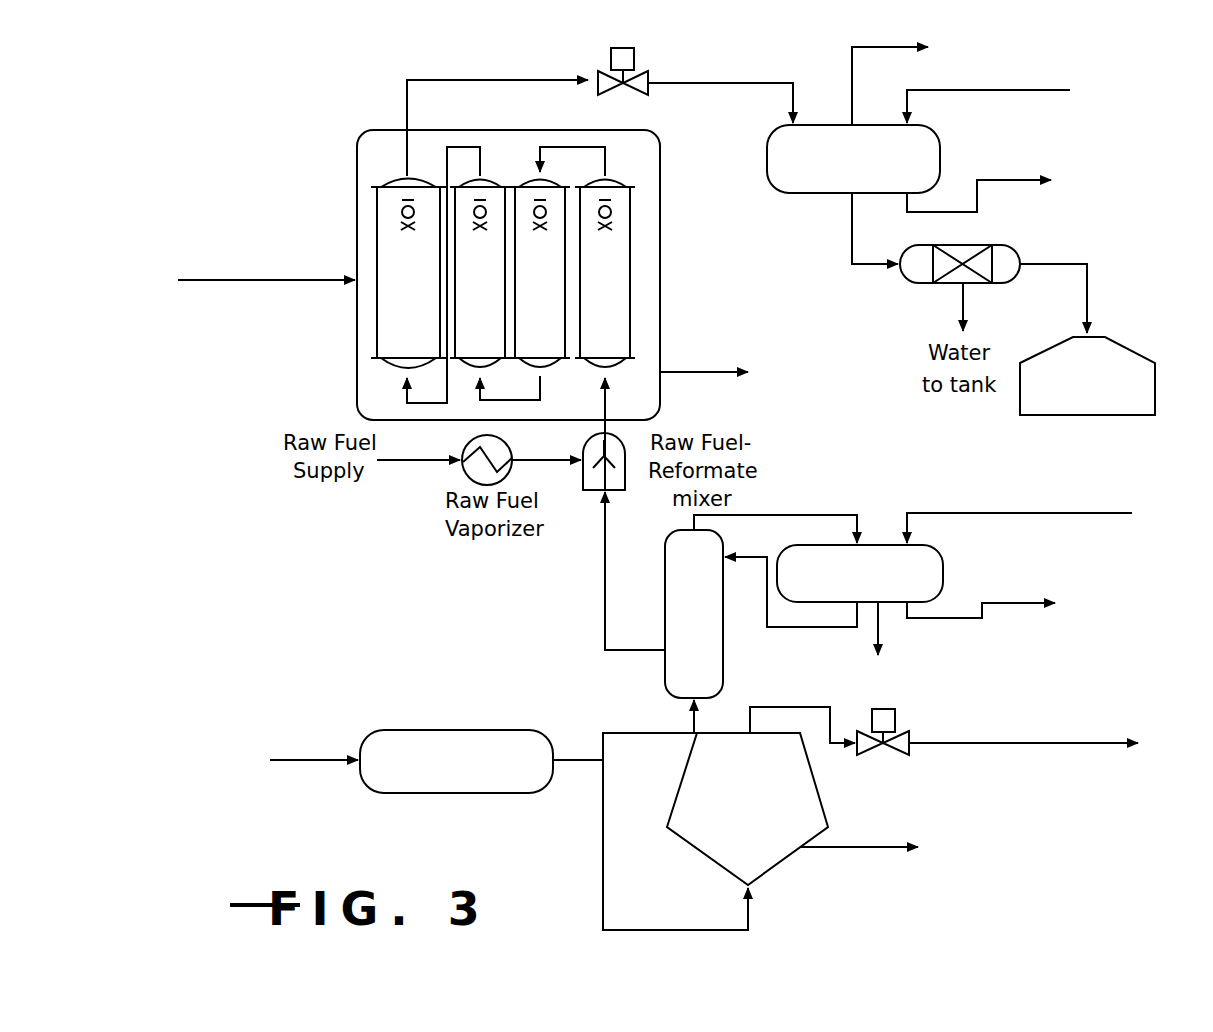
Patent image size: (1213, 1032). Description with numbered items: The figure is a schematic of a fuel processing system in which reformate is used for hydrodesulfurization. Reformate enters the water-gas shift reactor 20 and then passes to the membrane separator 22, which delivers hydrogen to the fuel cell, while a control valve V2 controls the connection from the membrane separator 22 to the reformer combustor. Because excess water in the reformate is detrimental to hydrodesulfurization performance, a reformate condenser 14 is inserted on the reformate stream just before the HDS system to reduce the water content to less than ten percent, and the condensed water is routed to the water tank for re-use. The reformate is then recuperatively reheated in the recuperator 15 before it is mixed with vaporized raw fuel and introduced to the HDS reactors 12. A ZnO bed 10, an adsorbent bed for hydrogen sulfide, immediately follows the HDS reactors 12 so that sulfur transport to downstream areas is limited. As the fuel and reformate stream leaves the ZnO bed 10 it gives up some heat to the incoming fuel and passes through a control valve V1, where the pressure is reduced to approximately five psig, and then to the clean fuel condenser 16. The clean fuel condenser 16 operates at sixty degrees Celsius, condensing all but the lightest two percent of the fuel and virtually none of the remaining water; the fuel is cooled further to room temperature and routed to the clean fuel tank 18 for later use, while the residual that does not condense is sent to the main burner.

The ZnO bed 10 is at (380, 225).
The HDS reactors 12 is at (448, 292).
The control valve V1 is at (645, 80).
The control valve V2 is at (905, 738).
The reformate condenser 14 is at (882, 545).
The recuperator 15 is at (665, 605).
The clean fuel condenser 16 is at (830, 128).
The clean fuel tank 18 is at (1130, 355).
The water-gas shift reactor 20 is at (447, 728).
The membrane separator 22 is at (698, 850).